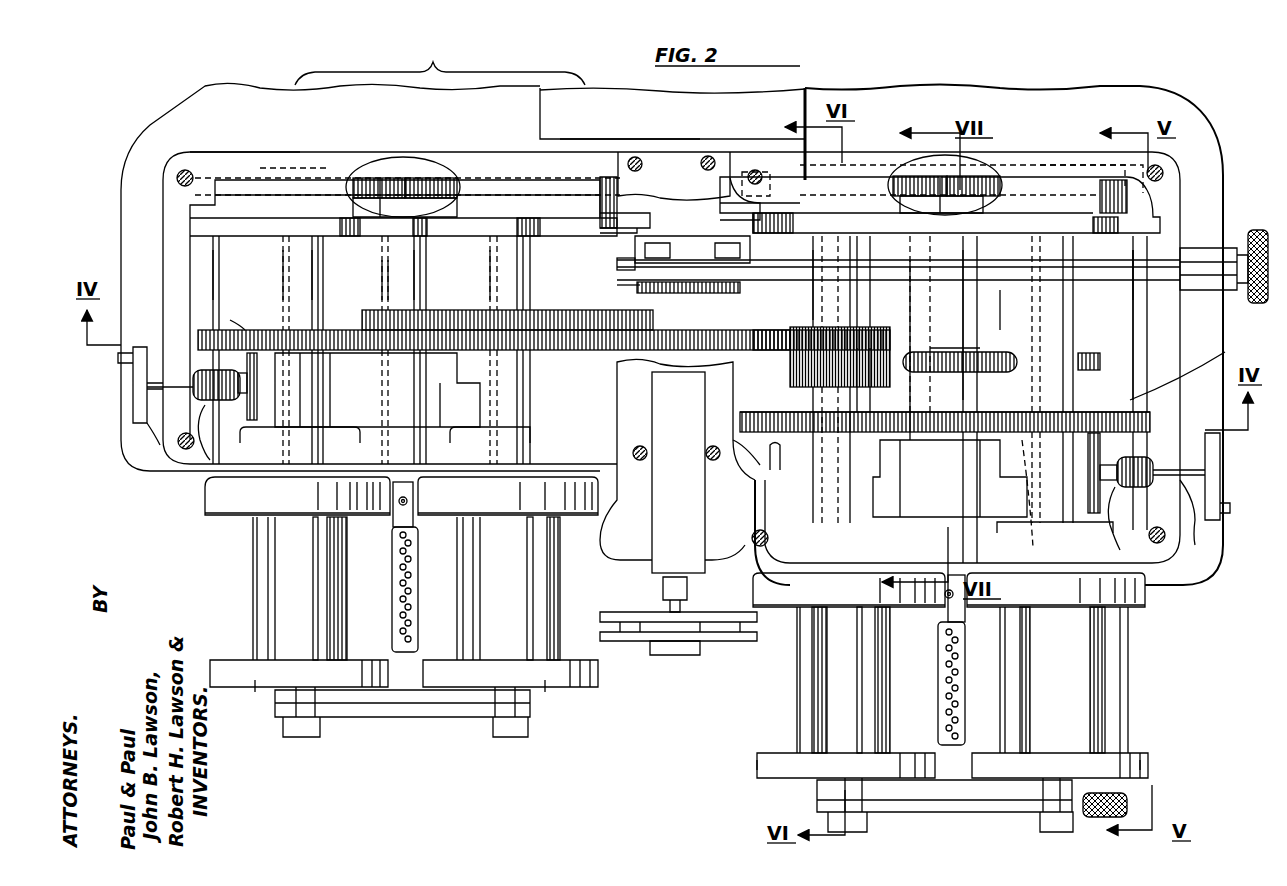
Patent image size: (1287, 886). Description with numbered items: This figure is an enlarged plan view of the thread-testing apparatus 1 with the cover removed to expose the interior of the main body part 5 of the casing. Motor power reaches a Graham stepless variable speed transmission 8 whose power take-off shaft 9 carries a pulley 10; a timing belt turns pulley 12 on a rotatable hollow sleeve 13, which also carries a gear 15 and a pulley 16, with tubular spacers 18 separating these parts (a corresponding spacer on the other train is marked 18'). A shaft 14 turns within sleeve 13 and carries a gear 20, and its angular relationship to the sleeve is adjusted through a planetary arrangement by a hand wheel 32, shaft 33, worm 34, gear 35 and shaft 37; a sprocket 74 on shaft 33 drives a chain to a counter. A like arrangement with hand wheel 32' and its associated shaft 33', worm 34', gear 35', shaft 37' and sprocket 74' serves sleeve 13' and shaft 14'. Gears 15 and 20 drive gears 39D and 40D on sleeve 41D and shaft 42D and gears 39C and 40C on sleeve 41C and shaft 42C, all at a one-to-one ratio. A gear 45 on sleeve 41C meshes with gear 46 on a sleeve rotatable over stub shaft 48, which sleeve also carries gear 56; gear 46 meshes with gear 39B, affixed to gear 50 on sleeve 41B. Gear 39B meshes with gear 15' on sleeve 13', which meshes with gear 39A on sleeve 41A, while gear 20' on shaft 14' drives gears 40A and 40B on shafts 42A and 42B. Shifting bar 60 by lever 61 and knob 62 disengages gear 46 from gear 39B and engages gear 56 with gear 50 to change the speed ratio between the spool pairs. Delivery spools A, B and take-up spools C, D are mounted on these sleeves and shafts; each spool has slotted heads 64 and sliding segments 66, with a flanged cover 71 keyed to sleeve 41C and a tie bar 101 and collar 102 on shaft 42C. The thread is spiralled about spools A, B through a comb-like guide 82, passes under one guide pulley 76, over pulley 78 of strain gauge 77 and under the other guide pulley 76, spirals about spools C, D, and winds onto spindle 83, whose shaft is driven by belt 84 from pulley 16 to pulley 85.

The apparatus 1 is at (440, 62).
The main body part 5 is at (238, 155).
The Graham stepless variable speed transmission 8 is at (676, 120).
The power take-off shaft 9 is at (625, 292).
The pulley 10 is at (625, 258).
The pulley 12 is at (1000, 280).
The rotatable hollow sleeve 13 is at (908, 330).
The sleeve 13' is at (357, 286).
The shaft 14 is at (903, 415).
The shaft 14' is at (360, 280).
The gear 15 is at (950, 447).
The gear 15' is at (377, 390).
The pulley 16 is at (948, 350).
The tubular spacers 18 is at (725, 332).
The gear 18' is at (346, 272).
The gear 20 is at (981, 198).
The gear 20' is at (395, 166).
The hand wheel 32 is at (1235, 480).
The hand wheel 32' is at (132, 385).
The shaft 33 is at (1197, 515).
The arm 33' is at (143, 437).
The worm 34 is at (1159, 440).
The worm 34' is at (186, 355).
The gear 35 is at (1123, 523).
The spring 35' is at (217, 436).
The shaft 37 is at (1173, 325).
The post 37' is at (235, 272).
The gear 39A is at (247, 310).
The gear 39B is at (536, 350).
The gear 39C is at (782, 420).
The gear 39D is at (1202, 363).
The gear 40A is at (360, 178).
The gear 40B is at (440, 178).
The gear 40C is at (905, 180).
The gear 40D is at (985, 178).
The sleeve 41A is at (283, 282).
The sleeve 41B is at (490, 272).
The sleeve 41C is at (822, 297).
The sleeve 41D is at (1060, 548).
The shaft 42A is at (300, 453).
The shaft 42B is at (500, 453).
The shaft 42C is at (835, 473).
The shaft 42D is at (1089, 171).
The gear 45 is at (790, 362).
The gear 46 is at (762, 330).
The stub shaft 48 is at (680, 362).
The gear 50 is at (550, 310).
The gear 56 is at (710, 293).
The bar 60 is at (764, 262).
The lever 61 is at (1215, 262).
The knob 62 is at (1256, 230).
The spool heads 64 is at (225, 517).
The segments 66 is at (330, 590).
The flanged cover 71 is at (675, 542).
The sprocket 74 is at (1104, 446).
The gear 74' is at (267, 410).
The guide pulleys 76 is at (605, 612).
The strain gauge 77 is at (678, 472).
The pulley 78 is at (650, 650).
The comb-like guide 82 is at (398, 602).
The spindle 83 is at (1120, 795).
The belt 84 is at (963, 353).
The pulley 85 is at (1110, 372).
The tie bar 101 is at (387, 705).
The collar 102 is at (679, 720).
The delivery spool A is at (262, 688).
The delivery spool B is at (540, 685).
The take-up spool C is at (760, 775).
The take-up spool D is at (1148, 762).